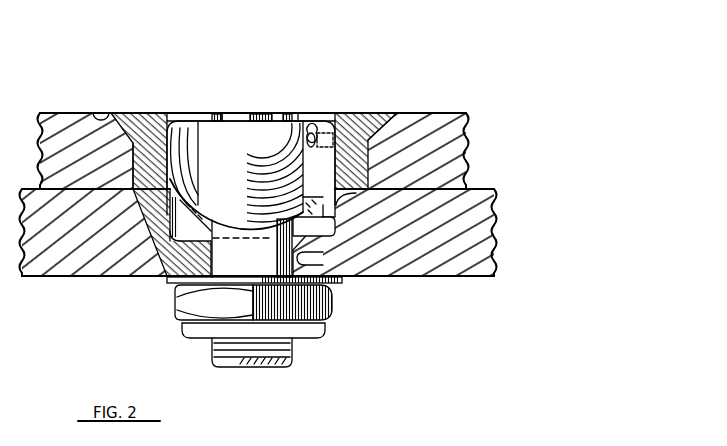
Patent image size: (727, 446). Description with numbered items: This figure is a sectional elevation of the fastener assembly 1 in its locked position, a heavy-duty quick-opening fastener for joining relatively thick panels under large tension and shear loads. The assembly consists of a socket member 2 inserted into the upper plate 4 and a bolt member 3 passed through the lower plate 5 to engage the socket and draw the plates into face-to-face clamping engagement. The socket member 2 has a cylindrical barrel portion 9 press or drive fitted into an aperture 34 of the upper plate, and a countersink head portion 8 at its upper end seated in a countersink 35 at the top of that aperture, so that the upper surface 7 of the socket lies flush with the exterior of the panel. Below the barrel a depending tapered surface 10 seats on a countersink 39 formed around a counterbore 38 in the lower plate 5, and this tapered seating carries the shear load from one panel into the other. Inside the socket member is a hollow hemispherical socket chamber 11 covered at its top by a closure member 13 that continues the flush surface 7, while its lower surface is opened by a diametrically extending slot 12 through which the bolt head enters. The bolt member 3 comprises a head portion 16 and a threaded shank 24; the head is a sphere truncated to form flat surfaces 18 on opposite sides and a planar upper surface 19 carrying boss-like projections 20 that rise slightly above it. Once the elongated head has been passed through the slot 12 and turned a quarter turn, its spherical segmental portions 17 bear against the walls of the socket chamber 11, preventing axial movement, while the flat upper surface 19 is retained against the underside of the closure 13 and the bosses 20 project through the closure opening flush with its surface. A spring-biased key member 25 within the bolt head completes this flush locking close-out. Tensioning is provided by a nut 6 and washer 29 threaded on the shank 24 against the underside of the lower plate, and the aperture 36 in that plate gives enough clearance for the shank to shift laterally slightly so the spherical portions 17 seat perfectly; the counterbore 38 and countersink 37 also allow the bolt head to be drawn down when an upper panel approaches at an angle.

The fastener assembly 1 is at (367, 92).
The socket member 2 is at (147, 95).
The bolt member 3 is at (302, 345).
The upper plate 4 is at (67, 137).
The lower plate 5 is at (102, 255).
The nut 6 is at (190, 303).
The upper surface of socket member 7 is at (350, 117).
The countersink head portion 8 is at (100, 118).
The cylindrical barrel portion 9 is at (133, 158).
The tapered surface 10 is at (147, 200).
The hemispherical socket chamber 11 is at (185, 130).
The slot 12 is at (205, 242).
The closure member 13 is at (208, 117).
The head portion 16 is at (267, 137).
The spherical segmental portions 17 is at (258, 160).
The flat surfaces 18 is at (197, 190).
The planar upper surface 19 is at (303, 117).
The boss-like projections 20 is at (215, 117).
The shank 24 is at (267, 283).
The key member 25 is at (257, 117).
The washer 29 is at (170, 278).
The aperture 34 is at (370, 157).
The countersink 35 is at (381, 128).
The aperture 36 is at (203, 263).
The countersink 37 is at (320, 258).
The counterbore 38 is at (335, 232).
The countersink 39 is at (353, 200).